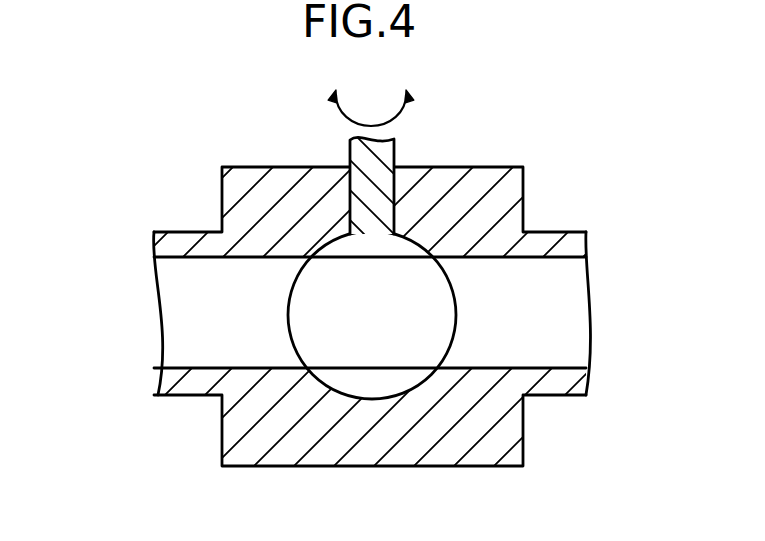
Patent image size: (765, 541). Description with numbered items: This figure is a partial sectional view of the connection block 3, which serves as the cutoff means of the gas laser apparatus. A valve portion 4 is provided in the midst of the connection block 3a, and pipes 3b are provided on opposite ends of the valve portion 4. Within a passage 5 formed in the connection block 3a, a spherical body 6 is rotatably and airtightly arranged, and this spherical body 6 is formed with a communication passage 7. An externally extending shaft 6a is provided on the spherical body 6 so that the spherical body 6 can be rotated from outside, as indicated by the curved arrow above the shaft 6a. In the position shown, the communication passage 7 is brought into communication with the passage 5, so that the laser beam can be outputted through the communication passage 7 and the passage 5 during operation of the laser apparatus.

The connection block 3 is at (382, 287).
The connection block 3a is at (382, 339).
The pipes 3b is at (545, 243).
The valve portion 4 is at (318, 422).
The passage 5 is at (178, 326).
The spherical body 6 is at (373, 385).
The shaft 6a is at (390, 152).
The communication passage 7 is at (430, 316).